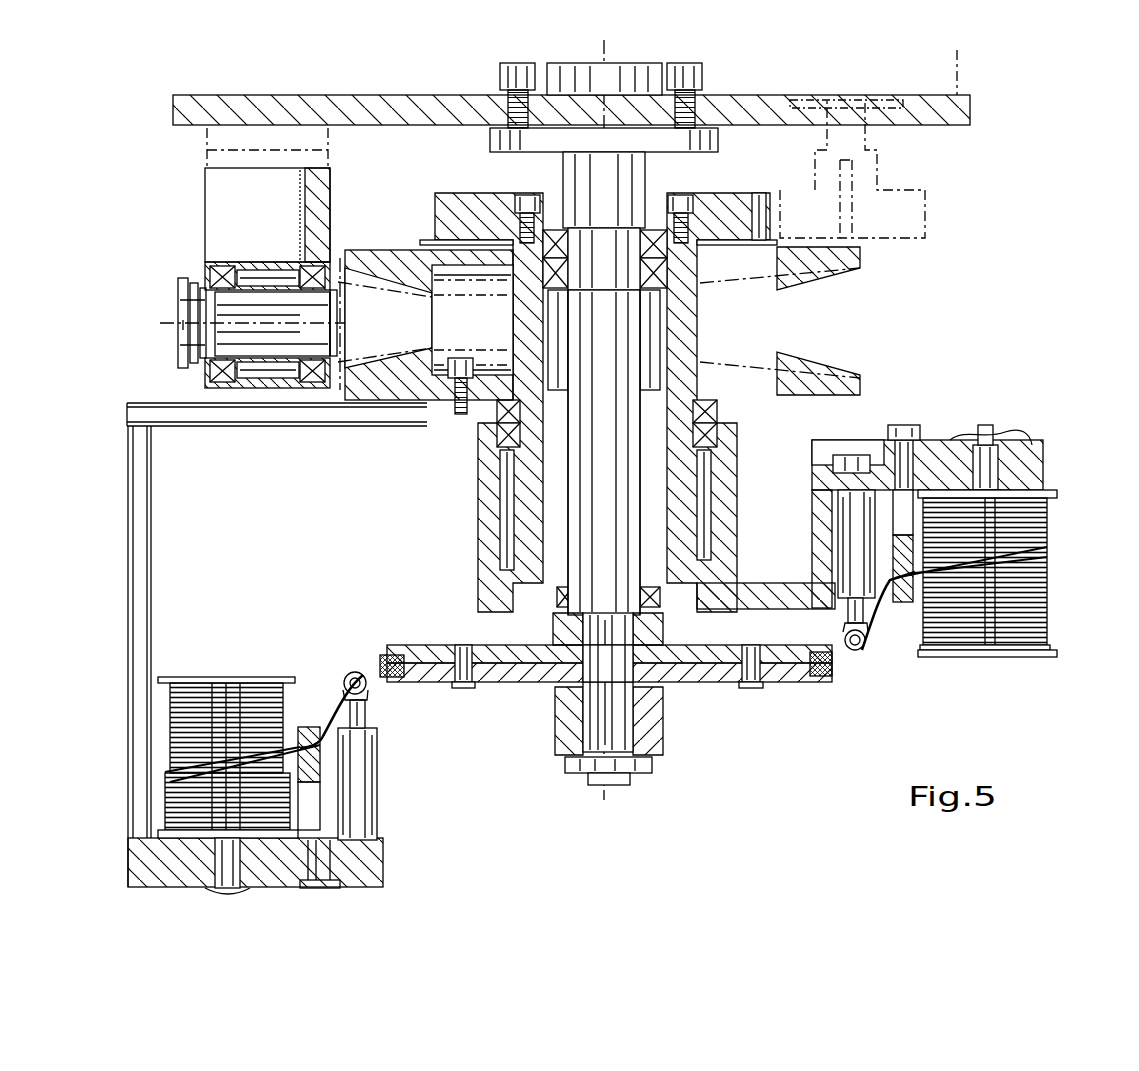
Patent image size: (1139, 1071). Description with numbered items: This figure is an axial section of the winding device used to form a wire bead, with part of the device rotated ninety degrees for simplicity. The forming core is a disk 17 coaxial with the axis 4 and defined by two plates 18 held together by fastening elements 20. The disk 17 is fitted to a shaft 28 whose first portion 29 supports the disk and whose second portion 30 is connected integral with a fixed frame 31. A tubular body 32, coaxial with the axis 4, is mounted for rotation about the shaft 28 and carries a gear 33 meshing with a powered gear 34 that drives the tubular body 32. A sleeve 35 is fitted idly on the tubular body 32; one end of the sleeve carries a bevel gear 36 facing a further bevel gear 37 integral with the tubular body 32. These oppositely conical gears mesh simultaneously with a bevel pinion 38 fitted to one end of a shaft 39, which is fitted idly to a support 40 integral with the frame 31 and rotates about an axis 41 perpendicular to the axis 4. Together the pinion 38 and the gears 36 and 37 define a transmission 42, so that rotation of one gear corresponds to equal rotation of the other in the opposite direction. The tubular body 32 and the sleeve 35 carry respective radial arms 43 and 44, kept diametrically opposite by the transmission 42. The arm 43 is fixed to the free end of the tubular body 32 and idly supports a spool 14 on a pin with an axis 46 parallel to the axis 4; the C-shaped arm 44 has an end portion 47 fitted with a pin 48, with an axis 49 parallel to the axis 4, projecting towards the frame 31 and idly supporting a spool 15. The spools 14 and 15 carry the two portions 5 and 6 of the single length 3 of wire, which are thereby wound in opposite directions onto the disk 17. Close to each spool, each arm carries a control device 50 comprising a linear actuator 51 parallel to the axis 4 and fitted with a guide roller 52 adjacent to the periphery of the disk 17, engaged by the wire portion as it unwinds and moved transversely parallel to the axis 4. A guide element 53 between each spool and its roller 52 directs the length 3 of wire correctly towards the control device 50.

The length of wire 3 is at (365, 720).
The axis 4 is at (615, 800).
The first portion of the length of wire 5 is at (1050, 597).
The second portion of the length of wire 6 is at (283, 710).
The spool 14 is at (967, 658).
The spool 15 is at (215, 672).
The forming core (disk) 17 is at (727, 678).
The plates 18 is at (420, 648).
The fastening elements 20 is at (456, 650).
The shaft 28 is at (588, 463).
The first portion of the shaft 29 is at (650, 690).
The second portion of the shaft 30 is at (630, 172).
The fixed frame 31 is at (912, 110).
The tubular body 32 is at (688, 350).
The gear 33 is at (752, 212).
The powered gear 34 is at (905, 222).
The sleeve 35 is at (490, 500).
The bevel gear 36 is at (815, 375).
The bevel gear 37 is at (820, 262).
The bevel pinion 38 is at (378, 262).
The shaft 39 is at (245, 300).
The support 40 is at (232, 228).
The axis 41 is at (185, 328).
The transmission 42 is at (398, 240).
The radial arm 43 is at (818, 517).
The radial arm 44 is at (243, 422).
The axis 46 is at (990, 660).
The end portion 47 is at (173, 858).
The pin 48 is at (213, 680).
The axis 49 is at (230, 680).
The control device 50 is at (385, 762).
The linear actuator 51 is at (360, 790).
The guide roller 52 is at (352, 672).
The guide element 53 is at (310, 812).